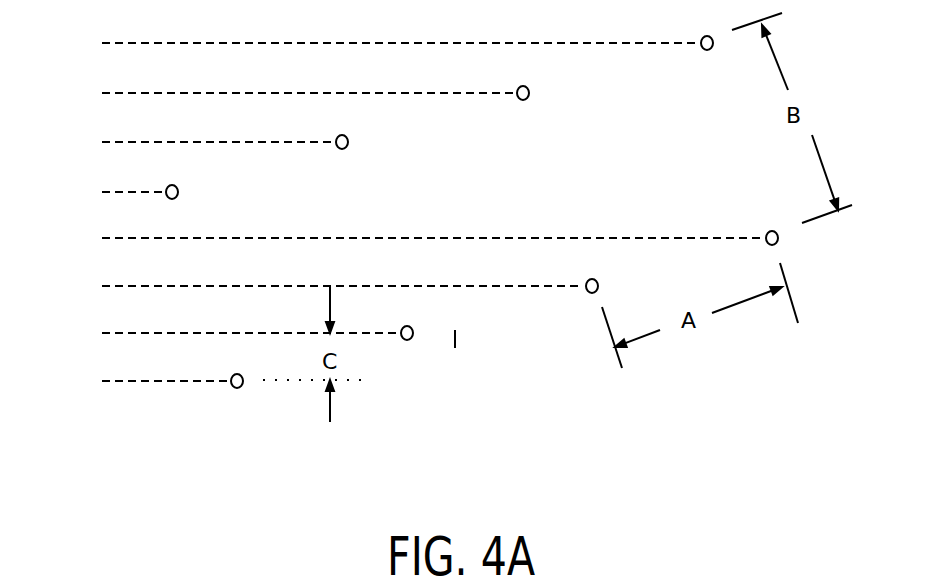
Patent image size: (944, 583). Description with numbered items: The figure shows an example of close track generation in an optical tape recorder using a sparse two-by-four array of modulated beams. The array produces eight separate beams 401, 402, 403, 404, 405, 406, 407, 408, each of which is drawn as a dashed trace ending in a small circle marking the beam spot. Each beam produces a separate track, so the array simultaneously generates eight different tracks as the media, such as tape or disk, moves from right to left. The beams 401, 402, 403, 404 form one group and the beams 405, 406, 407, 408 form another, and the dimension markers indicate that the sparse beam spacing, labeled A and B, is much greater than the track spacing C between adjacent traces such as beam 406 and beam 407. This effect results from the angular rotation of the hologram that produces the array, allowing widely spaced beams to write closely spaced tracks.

The beam 401 is at (130, 36).
The beam 402 is at (130, 86).
The beam 403 is at (130, 135).
The beam 404 is at (130, 185).
The beam 405 is at (130, 231).
The beam 406 is at (130, 279).
The beam 407 is at (130, 326).
The beam 408 is at (130, 374).